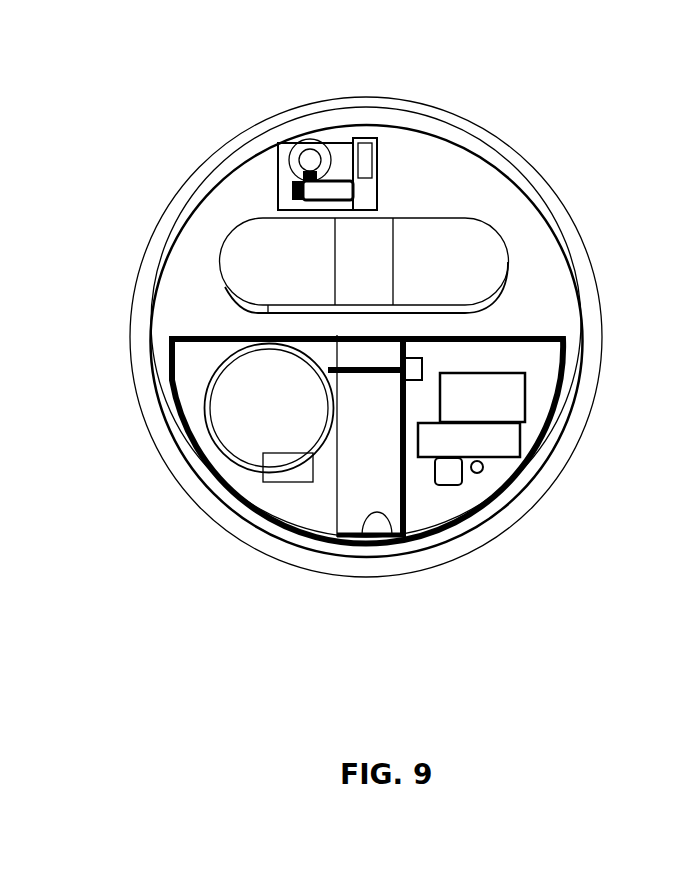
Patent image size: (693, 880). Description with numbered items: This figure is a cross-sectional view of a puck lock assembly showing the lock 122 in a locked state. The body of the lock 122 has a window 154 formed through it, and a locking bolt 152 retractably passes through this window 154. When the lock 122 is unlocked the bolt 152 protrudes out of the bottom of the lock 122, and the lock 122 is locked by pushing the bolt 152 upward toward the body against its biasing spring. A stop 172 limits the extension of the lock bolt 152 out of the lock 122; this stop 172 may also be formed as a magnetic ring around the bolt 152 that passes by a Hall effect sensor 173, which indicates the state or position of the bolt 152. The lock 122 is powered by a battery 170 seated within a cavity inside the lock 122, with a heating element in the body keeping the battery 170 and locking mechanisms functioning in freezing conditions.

The lock 122 is at (323, 92).
The locking bolt 152 is at (375, 400).
The window 154 is at (272, 262).
The battery 170 is at (268, 425).
The stop 172 is at (357, 368).
The Hall effect sensor 173 is at (422, 364).